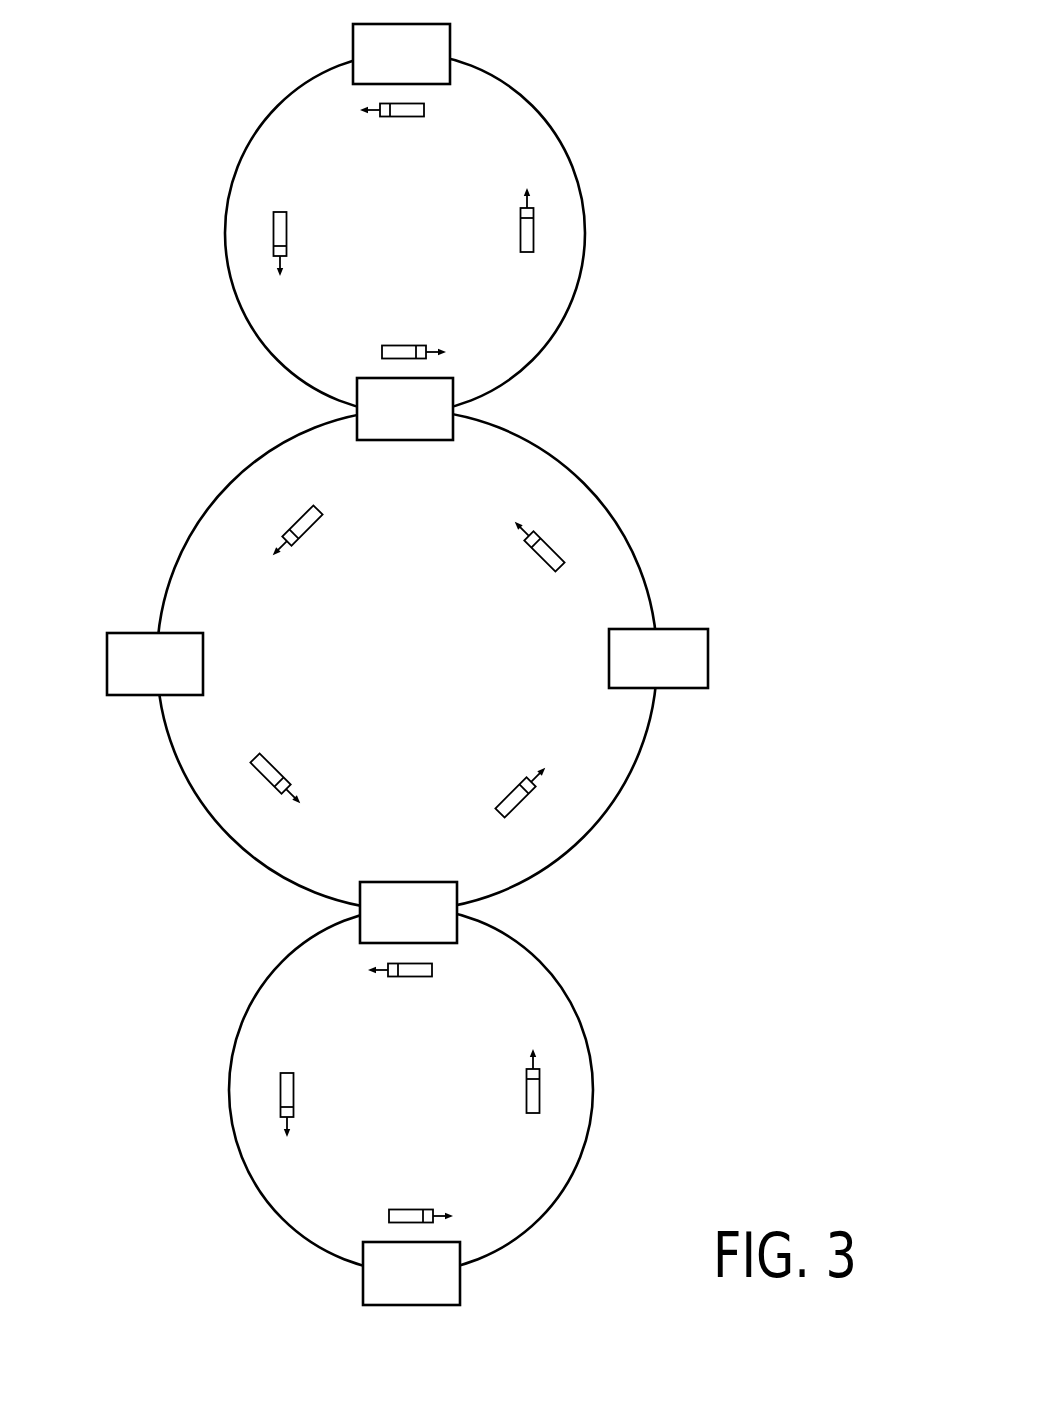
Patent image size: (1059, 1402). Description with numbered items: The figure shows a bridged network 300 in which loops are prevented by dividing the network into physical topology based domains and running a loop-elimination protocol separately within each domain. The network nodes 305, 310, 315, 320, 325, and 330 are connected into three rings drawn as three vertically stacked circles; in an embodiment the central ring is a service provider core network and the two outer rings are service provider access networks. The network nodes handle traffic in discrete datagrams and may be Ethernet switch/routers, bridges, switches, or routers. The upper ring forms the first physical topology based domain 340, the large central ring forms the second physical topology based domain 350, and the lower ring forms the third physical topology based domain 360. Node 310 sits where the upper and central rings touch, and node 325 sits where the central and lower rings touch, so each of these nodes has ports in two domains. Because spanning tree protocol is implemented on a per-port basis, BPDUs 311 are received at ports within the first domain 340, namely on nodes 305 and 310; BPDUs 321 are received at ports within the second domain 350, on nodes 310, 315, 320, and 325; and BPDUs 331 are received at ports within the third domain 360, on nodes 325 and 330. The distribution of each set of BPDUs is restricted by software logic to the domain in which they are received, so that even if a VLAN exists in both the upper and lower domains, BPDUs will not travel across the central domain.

The bridged network 300 is at (718, 49).
The network node 305 is at (353, 38).
The network node 310 is at (357, 410).
The BPDUs 311 is at (401, 118).
The network node 315 is at (107, 664).
The network node 320 is at (708, 655).
The BPDUs 321 is at (305, 528).
The network node 325 is at (360, 915).
The network node 330 is at (363, 1292).
The BPDUs 331 is at (408, 978).
The physical topology based domain 10 340 is at (430, 272).
The physical topology based domain 20 350 is at (433, 702).
The physical topology based domain 30 360 is at (438, 1135).